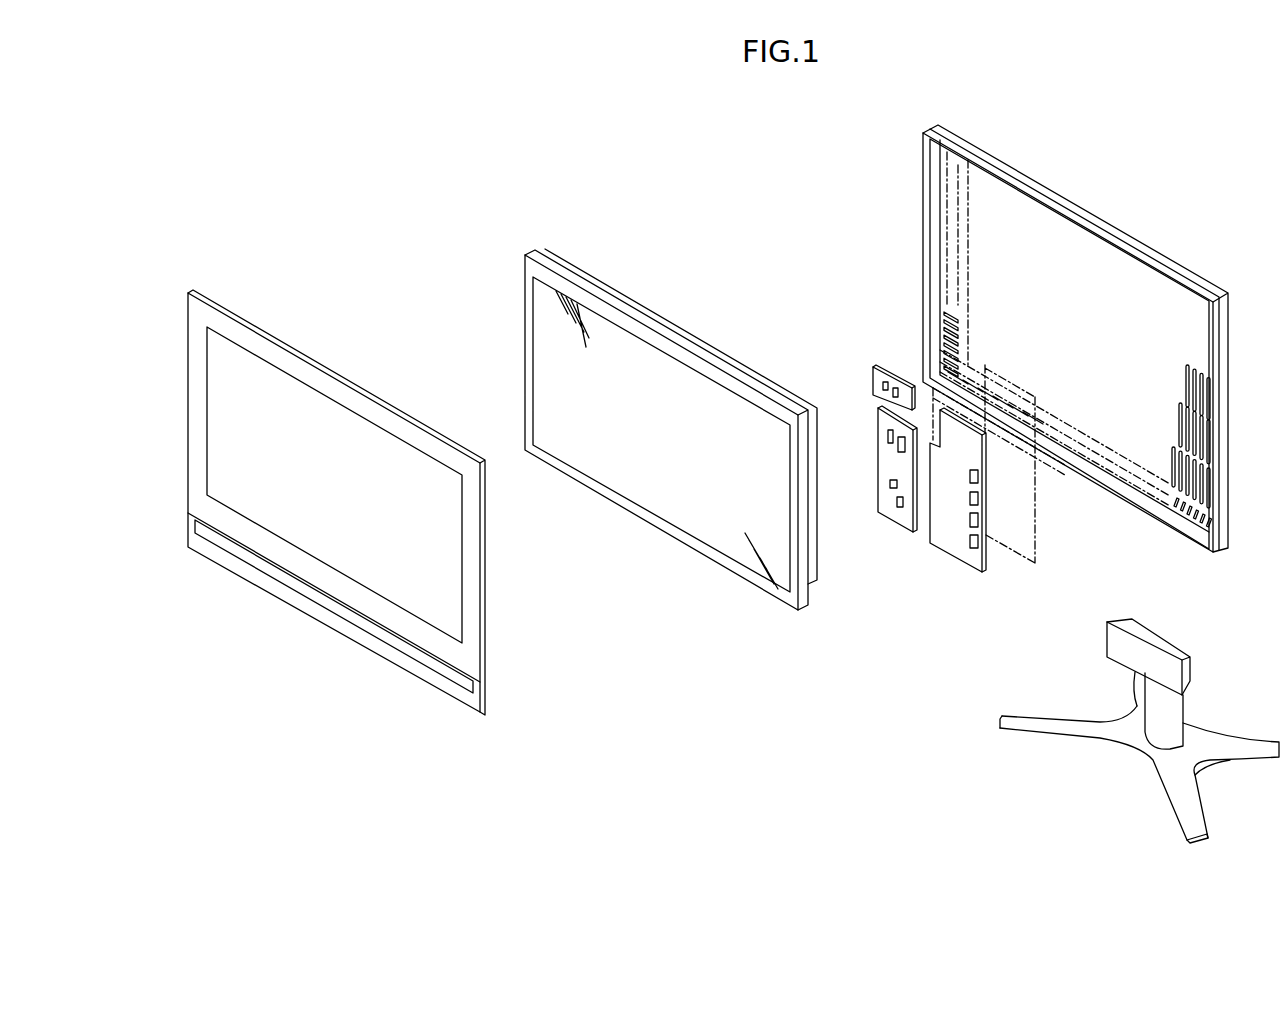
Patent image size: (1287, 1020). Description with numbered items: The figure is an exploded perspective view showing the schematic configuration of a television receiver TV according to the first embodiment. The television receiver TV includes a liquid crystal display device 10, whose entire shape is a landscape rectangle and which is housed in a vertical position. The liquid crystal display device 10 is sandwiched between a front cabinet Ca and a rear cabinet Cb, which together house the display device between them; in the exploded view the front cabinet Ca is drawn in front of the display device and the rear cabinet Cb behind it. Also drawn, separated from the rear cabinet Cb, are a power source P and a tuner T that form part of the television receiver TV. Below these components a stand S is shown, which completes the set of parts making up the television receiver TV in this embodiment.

The television receiver TV is at (690, 198).
The front cabinet Ca is at (320, 368).
The liquid crystal display device 10 is at (620, 293).
The rear cabinet Cb is at (1068, 200).
The tuner T is at (890, 527).
The power source P is at (950, 555).
The stand S is at (1063, 742).